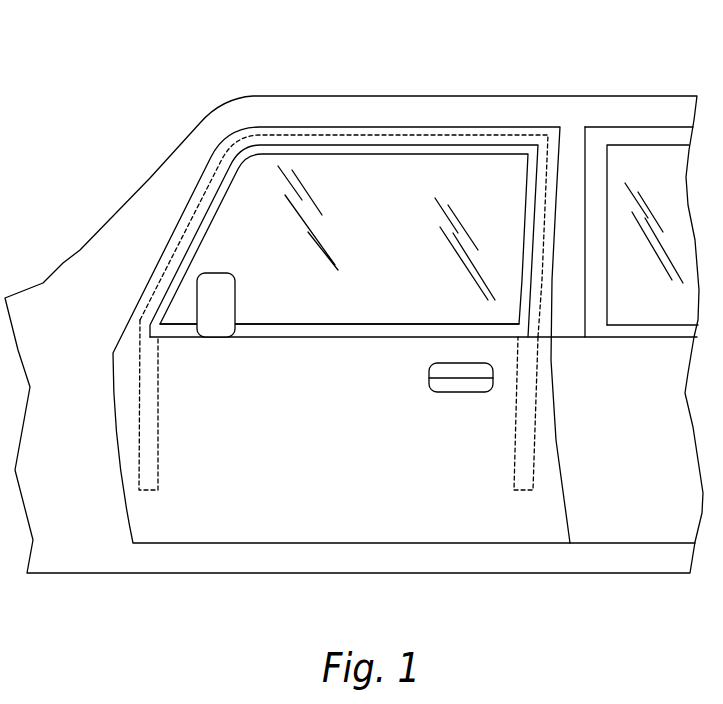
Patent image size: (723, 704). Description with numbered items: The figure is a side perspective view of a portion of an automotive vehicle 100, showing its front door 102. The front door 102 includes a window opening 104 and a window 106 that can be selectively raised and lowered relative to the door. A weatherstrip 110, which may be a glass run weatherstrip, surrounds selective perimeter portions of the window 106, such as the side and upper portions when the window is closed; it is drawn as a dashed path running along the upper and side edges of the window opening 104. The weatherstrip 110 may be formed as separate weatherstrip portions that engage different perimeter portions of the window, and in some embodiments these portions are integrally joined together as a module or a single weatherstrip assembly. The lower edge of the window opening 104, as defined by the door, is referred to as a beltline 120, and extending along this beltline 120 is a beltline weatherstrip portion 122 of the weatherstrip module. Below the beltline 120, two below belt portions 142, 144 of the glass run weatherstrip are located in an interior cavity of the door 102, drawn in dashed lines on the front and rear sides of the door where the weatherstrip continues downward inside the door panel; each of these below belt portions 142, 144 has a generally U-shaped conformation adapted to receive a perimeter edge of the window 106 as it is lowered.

The automotive vehicle 100 is at (601, 92).
The front door 102 is at (332, 468).
The window opening 104 is at (405, 147).
The window 106 is at (290, 220).
The weatherstrip 110 is at (312, 117).
The beltline 120 is at (378, 323).
The beltline weatherstrip portion 122 is at (321, 333).
The below belt portion 142 is at (150, 444).
The below belt portion 144 is at (522, 445).